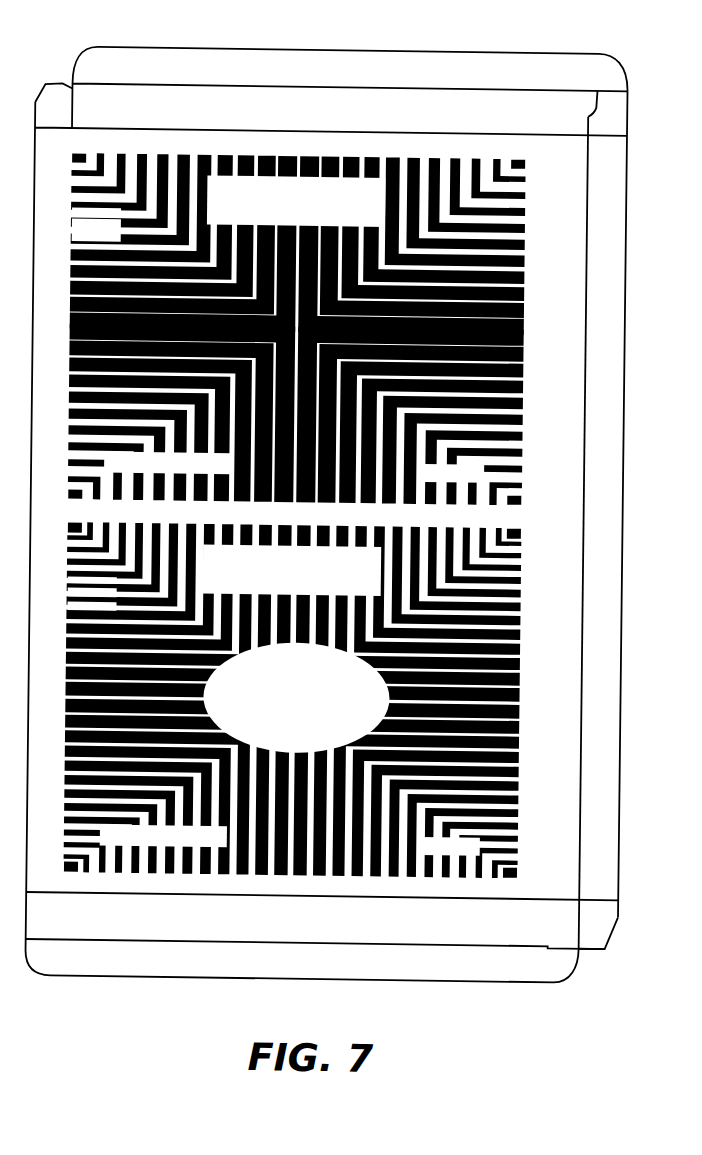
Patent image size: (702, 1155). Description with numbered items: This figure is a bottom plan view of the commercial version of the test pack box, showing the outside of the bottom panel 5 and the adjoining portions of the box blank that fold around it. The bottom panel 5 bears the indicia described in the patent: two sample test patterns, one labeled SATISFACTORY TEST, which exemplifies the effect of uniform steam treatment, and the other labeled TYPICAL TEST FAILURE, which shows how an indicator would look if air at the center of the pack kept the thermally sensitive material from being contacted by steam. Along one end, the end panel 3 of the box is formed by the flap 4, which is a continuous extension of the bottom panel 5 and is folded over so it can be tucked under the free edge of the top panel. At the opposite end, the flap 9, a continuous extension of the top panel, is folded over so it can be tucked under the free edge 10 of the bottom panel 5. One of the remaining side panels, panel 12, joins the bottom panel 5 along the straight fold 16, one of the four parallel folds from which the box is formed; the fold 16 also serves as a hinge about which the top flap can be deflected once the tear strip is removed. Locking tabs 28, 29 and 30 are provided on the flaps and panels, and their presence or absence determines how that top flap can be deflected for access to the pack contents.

The end panel 3 is at (499, 929).
The flap 4 is at (503, 975).
The bottom panel 5 is at (547, 516).
The flap 9 is at (433, 46).
The free edge 10 is at (323, 128).
The panel 12 is at (594, 671).
The fold 16 is at (588, 720).
The locking tab 28 is at (53, 83).
The locking tab 29 is at (627, 104).
The locking tab 30 is at (618, 928).